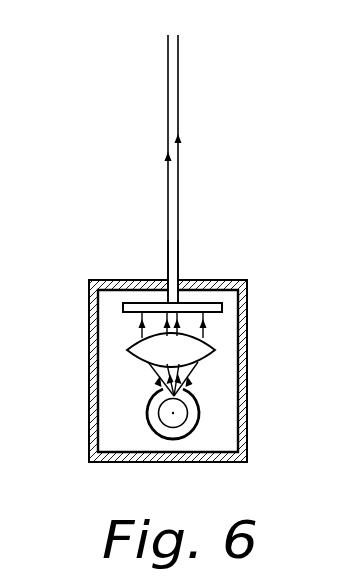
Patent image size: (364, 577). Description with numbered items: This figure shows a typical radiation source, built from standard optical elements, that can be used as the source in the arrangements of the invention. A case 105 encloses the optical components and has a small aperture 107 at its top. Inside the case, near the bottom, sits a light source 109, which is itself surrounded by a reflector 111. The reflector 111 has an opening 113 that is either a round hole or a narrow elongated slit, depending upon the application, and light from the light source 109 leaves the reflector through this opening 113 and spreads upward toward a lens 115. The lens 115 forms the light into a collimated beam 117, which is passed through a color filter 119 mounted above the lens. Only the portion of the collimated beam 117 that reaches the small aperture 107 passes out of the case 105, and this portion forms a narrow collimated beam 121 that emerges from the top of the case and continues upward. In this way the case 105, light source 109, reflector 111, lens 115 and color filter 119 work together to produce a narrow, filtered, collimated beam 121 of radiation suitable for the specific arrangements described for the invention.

The case 105 is at (243, 320).
The aperture 107 is at (175, 280).
The light source 109 is at (165, 413).
The reflector 111 is at (187, 433).
The opening 113 is at (181, 382).
The lens 115 is at (205, 353).
The collimated beam 117 is at (152, 318).
The color filter 119 is at (130, 303).
The narrow collimated beam 121 is at (182, 67).